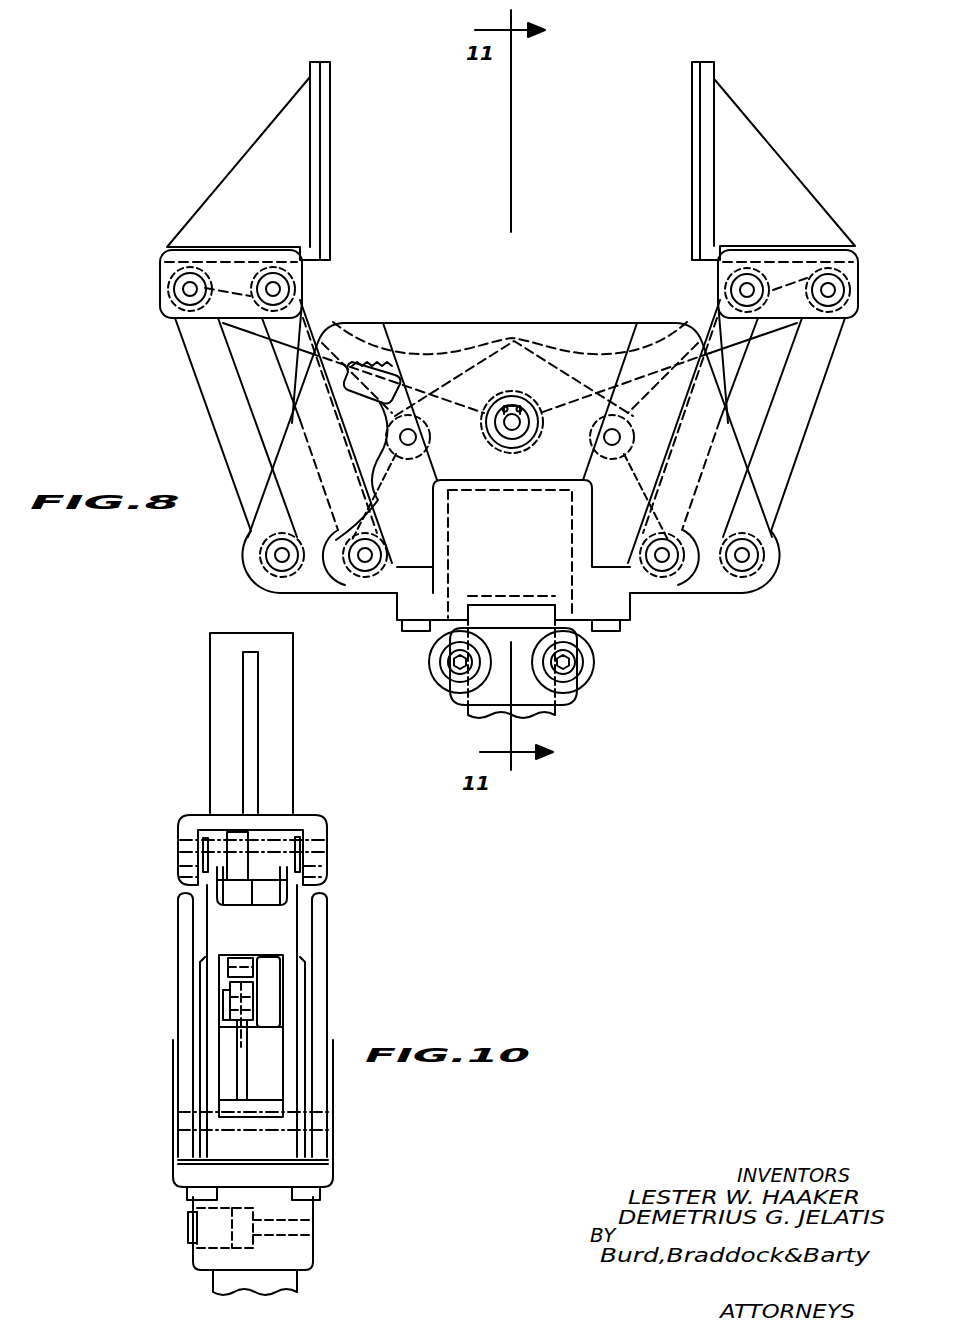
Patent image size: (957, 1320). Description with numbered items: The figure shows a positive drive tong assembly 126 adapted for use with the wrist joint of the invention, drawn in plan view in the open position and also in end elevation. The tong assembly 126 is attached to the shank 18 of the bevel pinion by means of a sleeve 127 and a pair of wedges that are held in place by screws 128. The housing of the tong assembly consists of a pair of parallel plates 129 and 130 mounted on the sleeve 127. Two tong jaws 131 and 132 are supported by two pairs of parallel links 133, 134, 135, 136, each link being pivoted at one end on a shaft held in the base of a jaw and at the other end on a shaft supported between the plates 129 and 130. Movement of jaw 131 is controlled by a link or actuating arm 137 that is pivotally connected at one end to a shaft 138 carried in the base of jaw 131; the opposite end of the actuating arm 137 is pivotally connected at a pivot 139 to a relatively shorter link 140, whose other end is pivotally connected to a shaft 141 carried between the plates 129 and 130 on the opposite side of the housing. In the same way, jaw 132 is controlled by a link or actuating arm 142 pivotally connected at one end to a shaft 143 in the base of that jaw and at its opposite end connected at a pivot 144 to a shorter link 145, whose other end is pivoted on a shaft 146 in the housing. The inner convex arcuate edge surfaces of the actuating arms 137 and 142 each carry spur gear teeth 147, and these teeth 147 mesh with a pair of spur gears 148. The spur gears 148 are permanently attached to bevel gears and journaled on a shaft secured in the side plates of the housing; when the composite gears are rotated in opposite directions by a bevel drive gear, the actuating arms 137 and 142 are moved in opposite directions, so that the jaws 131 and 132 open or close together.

In FIG. 8, the shank 18 is at (555, 712).
In FIG. 10, the shank 18 is at (225, 1282).
In FIG. 8, the tong assembly 126 is at (292, 421).
In FIG. 10, the tong assembly 126 is at (327, 982).
In FIG. 8, the sleeve 127 is at (495, 692).
In FIG. 10, the sleeve 127 is at (300, 1248).
In FIG. 8, the screws 128 is at (454, 667).
In FIG. 10, the screws 128 is at (190, 1228).
In FIG. 8, the plate 129 is at (435, 330).
In FIG. 10, the plate 129 is at (186, 985).
In FIG. 10, the plate 130 is at (327, 1015).
In FIG. 8, the tong jaw 131 is at (767, 167).
In FIG. 10, the tong jaw 131 is at (222, 737).
In FIG. 8, the tong jaw 132 is at (262, 167).
In FIG. 8, the parallel link 133 is at (795, 433).
In FIG. 10, the parallel link 133 is at (298, 890).
In FIG. 8, the parallel link 134 is at (737, 363).
In FIG. 8, the parallel link 135 is at (238, 442).
In FIG. 8, the parallel link 136 is at (292, 363).
In FIG. 8, the actuating arm 137 is at (700, 328).
In FIG. 10, the actuating arm 137 is at (221, 890).
In FIG. 8, the shaft 138 is at (830, 288).
In FIG. 8, the pivot connection 139 is at (404, 434).
In FIG. 8, the shorter link 140 is at (318, 585).
In FIG. 8, the shaft 141 is at (365, 555).
In FIG. 8, the actuating arm 142 is at (318, 322).
In FIG. 10, the actuating arm 142 is at (268, 972).
In FIG. 8, the shaft 143 is at (183, 289).
In FIG. 8, the pivot connection 144 is at (615, 433).
In FIG. 10, the pivot connection 144 is at (228, 1010).
In FIG. 8, the shorter link 145 is at (620, 512).
In FIG. 10, the shorter link 145 is at (240, 1075).
In FIG. 8, the shaft 146 is at (662, 557).
In FIG. 8, the spur gear teeth 147 is at (350, 397).
In FIG. 8, the spur gears 148 is at (490, 442).